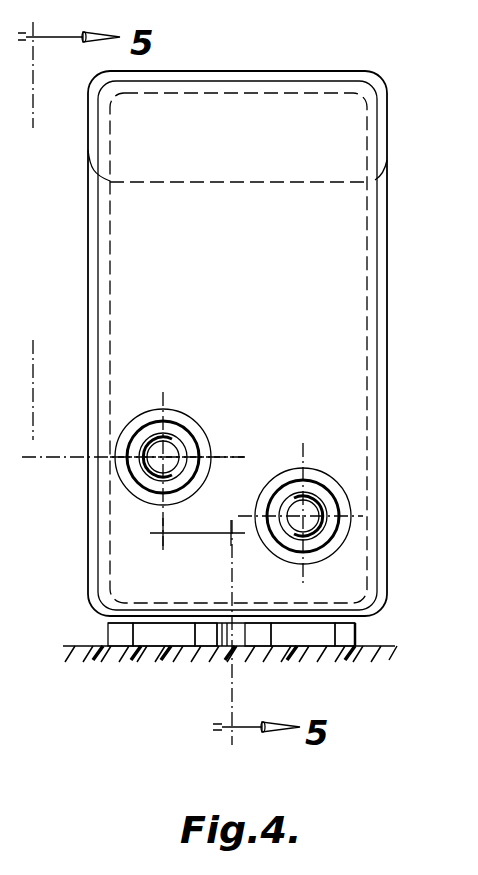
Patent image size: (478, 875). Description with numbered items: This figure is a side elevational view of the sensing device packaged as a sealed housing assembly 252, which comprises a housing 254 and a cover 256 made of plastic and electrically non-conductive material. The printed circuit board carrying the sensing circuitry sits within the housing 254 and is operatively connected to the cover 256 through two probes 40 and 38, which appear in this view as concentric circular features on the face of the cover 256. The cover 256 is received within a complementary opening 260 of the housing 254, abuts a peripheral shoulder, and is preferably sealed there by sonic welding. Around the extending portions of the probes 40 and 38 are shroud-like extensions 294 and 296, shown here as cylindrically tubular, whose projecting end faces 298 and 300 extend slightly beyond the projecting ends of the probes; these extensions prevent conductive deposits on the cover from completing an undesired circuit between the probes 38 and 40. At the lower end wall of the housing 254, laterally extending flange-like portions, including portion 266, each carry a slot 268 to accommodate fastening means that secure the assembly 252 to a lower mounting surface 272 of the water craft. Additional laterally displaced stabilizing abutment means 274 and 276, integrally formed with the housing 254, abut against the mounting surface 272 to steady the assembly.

The probe 38 is at (317, 525).
The probe 40 is at (172, 437).
The housing assembly 252 is at (390, 302).
The housing 254 is at (387, 233).
The cover 256 is at (86, 283).
The opening 260 is at (372, 386).
The flange-like portion 266 is at (279, 648).
The slot 268 is at (216, 648).
The mounting surface 272 is at (314, 641).
The stabilizing abutment means 274 is at (109, 630).
The stabilizing abutment means 276 is at (362, 646).
The shroud-like extension 294 is at (211, 437).
The shroud-like extension 296 is at (266, 544).
The projecting end face 298 is at (173, 497).
The projecting end face 300 is at (293, 471).